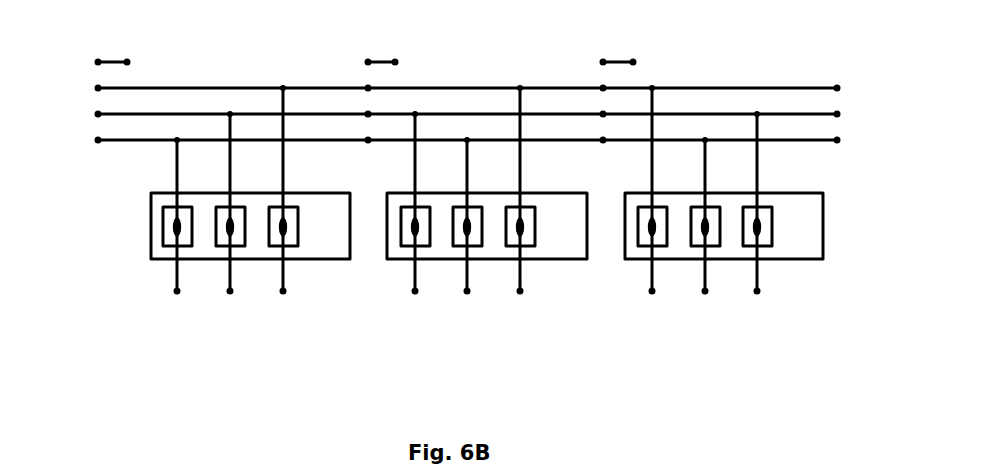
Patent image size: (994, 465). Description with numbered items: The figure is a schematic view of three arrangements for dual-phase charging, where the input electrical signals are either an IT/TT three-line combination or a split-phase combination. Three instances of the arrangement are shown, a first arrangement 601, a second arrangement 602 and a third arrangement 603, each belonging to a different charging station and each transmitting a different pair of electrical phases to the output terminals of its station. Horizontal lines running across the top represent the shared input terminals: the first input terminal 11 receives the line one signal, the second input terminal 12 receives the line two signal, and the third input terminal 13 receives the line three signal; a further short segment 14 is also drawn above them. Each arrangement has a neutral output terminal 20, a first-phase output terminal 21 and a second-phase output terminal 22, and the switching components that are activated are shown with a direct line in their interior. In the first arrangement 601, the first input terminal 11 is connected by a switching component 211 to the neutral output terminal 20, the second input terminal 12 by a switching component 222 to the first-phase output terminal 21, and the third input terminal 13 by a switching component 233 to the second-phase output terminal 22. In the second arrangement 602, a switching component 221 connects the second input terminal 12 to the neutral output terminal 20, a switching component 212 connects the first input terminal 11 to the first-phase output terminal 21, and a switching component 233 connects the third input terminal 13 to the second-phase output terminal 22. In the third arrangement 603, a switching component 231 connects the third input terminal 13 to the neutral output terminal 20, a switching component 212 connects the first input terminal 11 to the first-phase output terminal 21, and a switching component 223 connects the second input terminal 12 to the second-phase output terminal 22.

The first input terminal 11 is at (98, 140).
The second input terminal 12 is at (98, 114).
The third input terminal 13 is at (98, 88).
The fourth bus line segment 14 is at (98, 62).
The neutral output terminal 20 is at (177, 291).
The first-phase output terminal 21 is at (230, 291).
The second-phase output terminal 22 is at (283, 291).
The switching component 211 is at (163, 228).
The switching component 212 is at (453, 241).
The switching component 221 is at (401, 230).
The switching component 222 is at (216, 241).
The switching component 223 is at (763, 247).
The switching component 231 is at (638, 230).
The switching component 233 is at (290, 247).
The first arrangement 601 is at (151, 197).
The second arrangement 602 is at (495, 259).
The third arrangement 603 is at (823, 197).